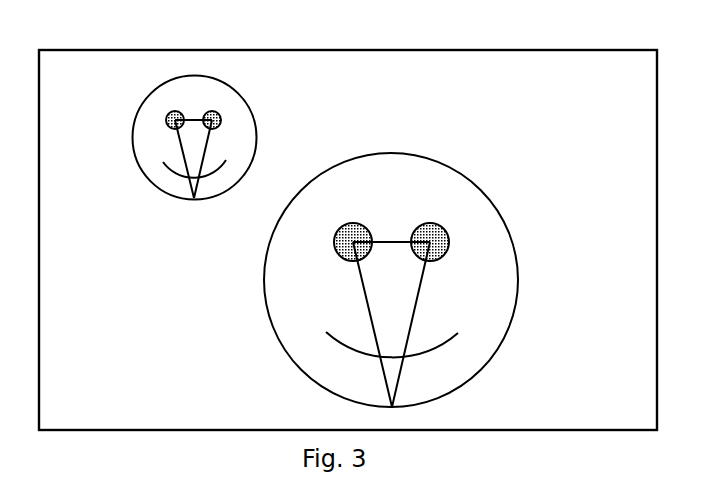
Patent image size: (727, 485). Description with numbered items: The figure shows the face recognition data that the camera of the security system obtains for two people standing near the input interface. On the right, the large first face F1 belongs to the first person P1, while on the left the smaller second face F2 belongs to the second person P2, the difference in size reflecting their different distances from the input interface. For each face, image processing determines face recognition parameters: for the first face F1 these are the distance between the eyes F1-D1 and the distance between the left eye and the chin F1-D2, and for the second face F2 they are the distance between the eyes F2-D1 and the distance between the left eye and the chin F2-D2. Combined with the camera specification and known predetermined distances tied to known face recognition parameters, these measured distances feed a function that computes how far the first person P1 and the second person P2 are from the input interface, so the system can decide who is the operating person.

The first face F1 is at (513, 365).
The second face F2 is at (127, 150).
The first person P1 is at (422, 255).
The second person P2 is at (214, 113).
The distance between the eyes of the first face F1-D1 is at (392, 233).
The distance between the left eye and the chin of the first face F1-D2 is at (425, 307).
The distance between the eyes of the second face F2-D1 is at (193, 110).
The distance between the left eye and the chin of the second face F2-D2 is at (213, 148).